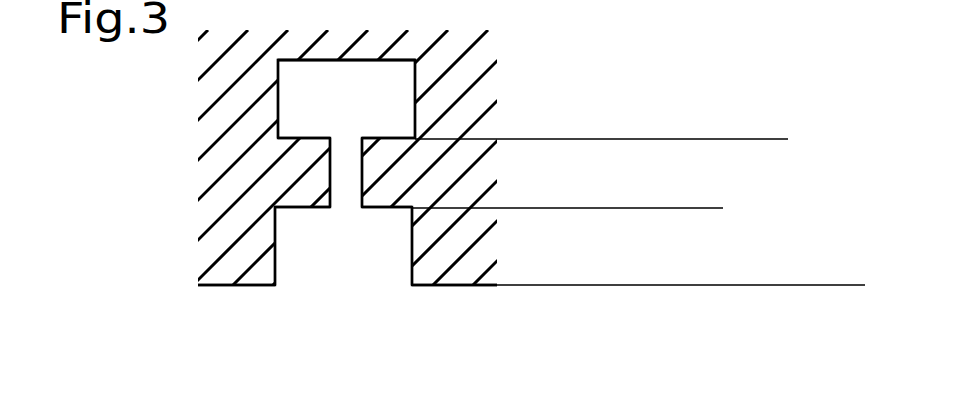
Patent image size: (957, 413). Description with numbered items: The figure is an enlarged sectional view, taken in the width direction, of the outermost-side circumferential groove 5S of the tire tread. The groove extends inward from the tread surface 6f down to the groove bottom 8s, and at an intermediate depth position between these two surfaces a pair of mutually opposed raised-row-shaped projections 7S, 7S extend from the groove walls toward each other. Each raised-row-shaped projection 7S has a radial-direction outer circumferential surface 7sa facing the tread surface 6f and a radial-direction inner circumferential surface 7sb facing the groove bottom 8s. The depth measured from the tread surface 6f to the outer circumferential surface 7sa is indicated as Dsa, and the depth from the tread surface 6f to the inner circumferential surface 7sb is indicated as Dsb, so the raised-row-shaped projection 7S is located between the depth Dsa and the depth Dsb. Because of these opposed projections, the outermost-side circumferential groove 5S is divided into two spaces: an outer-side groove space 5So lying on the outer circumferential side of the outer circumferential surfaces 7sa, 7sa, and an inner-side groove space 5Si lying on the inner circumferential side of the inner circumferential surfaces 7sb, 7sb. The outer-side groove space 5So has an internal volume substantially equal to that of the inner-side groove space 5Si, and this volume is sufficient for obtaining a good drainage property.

The outermost-side circumferential groove 5S is at (351, 296).
The inner-side groove space 5Si is at (370, 112).
The outer-side groove space 5So is at (372, 253).
The groove bottom 8s is at (360, 60).
The radial-direction inner circumferential surface 7sb is at (403, 137).
The radial-direction outer circumferential surface 7sa is at (403, 208).
The raised-row-shaped projection 7S is at (298, 203).
The tread surface 6f is at (248, 286).
The depth to inner circumferential surface Dsb is at (773, 285).
The depth to outer circumferential surface Dsa is at (707, 222).